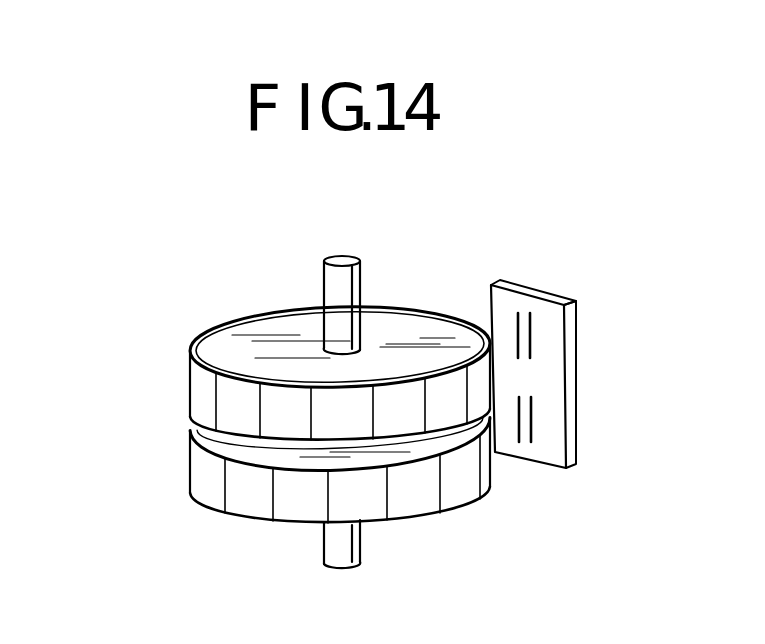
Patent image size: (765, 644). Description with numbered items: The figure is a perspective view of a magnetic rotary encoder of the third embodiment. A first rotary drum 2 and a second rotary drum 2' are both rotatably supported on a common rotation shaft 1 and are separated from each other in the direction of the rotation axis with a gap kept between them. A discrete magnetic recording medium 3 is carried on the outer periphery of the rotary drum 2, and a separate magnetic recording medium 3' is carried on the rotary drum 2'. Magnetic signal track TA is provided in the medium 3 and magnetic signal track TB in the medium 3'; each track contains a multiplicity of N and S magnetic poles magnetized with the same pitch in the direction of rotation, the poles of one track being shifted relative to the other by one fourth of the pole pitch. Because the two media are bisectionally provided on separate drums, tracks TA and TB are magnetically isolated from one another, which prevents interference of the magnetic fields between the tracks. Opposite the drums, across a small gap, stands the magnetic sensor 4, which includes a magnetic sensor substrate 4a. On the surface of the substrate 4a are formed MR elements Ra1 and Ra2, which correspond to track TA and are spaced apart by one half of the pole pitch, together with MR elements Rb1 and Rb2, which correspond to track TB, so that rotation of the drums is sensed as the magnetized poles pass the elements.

The rotation shaft 1 is at (327, 287).
The rotary drum 2 is at (340, 333).
The magnetic recording medium 3 is at (323, 367).
The rotary drum 2' is at (307, 436).
The magnetic recording medium 3' is at (332, 497).
The magnetic signal track TA is at (192, 372).
The magnetic signal track TB is at (190, 466).
The magnetic sensor 4 is at (576, 301).
The magnetic sensor substrate 4a is at (576, 325).
The MR element Ra1 is at (518, 325).
The MR element Ra2 is at (530, 328).
The MR element Rb1 is at (518, 428).
The MR element Rb2 is at (532, 432).